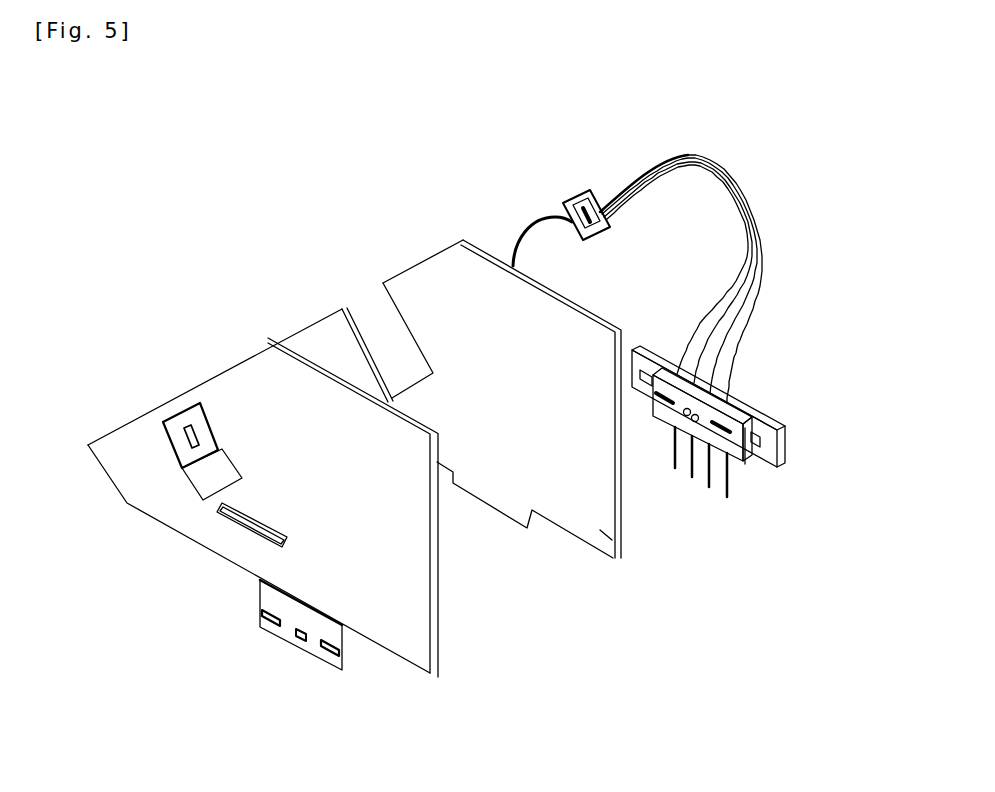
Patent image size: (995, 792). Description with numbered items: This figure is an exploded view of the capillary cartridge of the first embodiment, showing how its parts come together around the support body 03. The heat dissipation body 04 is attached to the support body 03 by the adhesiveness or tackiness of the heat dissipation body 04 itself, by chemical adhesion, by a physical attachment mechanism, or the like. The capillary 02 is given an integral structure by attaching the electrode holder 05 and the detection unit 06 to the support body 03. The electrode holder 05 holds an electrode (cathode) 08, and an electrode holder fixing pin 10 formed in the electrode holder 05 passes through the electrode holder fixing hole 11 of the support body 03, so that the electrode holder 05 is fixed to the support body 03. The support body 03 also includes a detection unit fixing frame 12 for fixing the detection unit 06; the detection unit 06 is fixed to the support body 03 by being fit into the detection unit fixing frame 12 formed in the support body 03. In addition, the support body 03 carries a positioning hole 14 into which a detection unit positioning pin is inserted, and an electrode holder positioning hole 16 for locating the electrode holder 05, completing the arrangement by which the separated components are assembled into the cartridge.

The capillary 02 is at (717, 168).
The support body 03 is at (438, 657).
The heat dissipation body 04 is at (622, 547).
The electrode holder 05 is at (772, 470).
The detection unit 06 is at (570, 190).
The electrode (cathode) 08 is at (733, 497).
The electrode holder fixing pin 10 is at (675, 427).
The electrode holder fixing hole 11 is at (290, 640).
The detection unit fixing frame 12 is at (163, 423).
The positioning hole 14 is at (187, 469).
The electrode holder positioning hole 16 is at (780, 433).